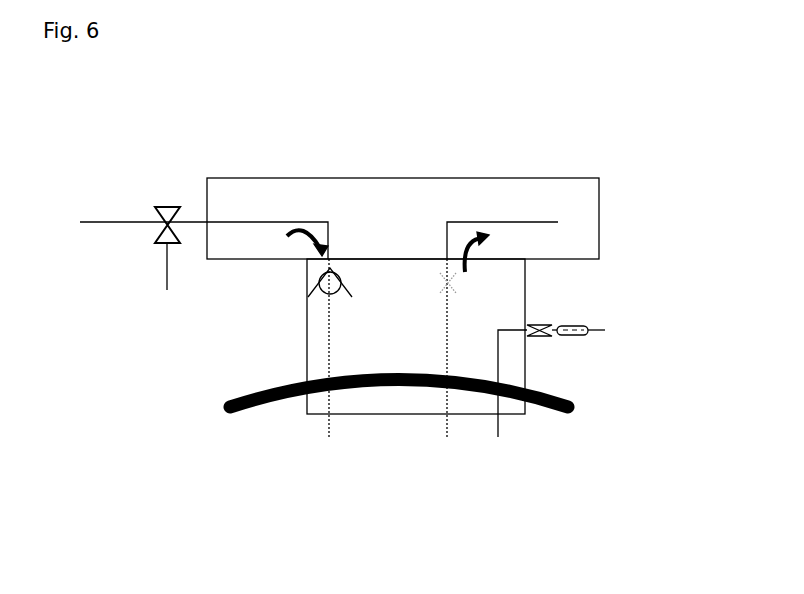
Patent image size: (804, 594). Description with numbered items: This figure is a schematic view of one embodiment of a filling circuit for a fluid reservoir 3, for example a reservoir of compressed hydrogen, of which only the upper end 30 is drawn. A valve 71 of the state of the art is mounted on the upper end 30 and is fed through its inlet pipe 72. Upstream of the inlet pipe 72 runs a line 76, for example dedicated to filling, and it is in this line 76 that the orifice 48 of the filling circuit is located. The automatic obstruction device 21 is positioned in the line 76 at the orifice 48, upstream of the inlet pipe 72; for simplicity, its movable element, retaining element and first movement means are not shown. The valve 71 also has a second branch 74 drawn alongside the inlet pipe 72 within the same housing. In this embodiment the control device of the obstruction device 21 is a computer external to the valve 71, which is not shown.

The fluid reservoir 3 is at (473, 457).
The automatic obstruction device 21 is at (155, 207).
The upper end of the reservoir 30 is at (259, 403).
The orifice 48 is at (180, 244).
The valve 71 is at (621, 222).
The inlet pipe 72 is at (313, 221).
The second valve 74 is at (510, 221).
The line 76 is at (110, 207).